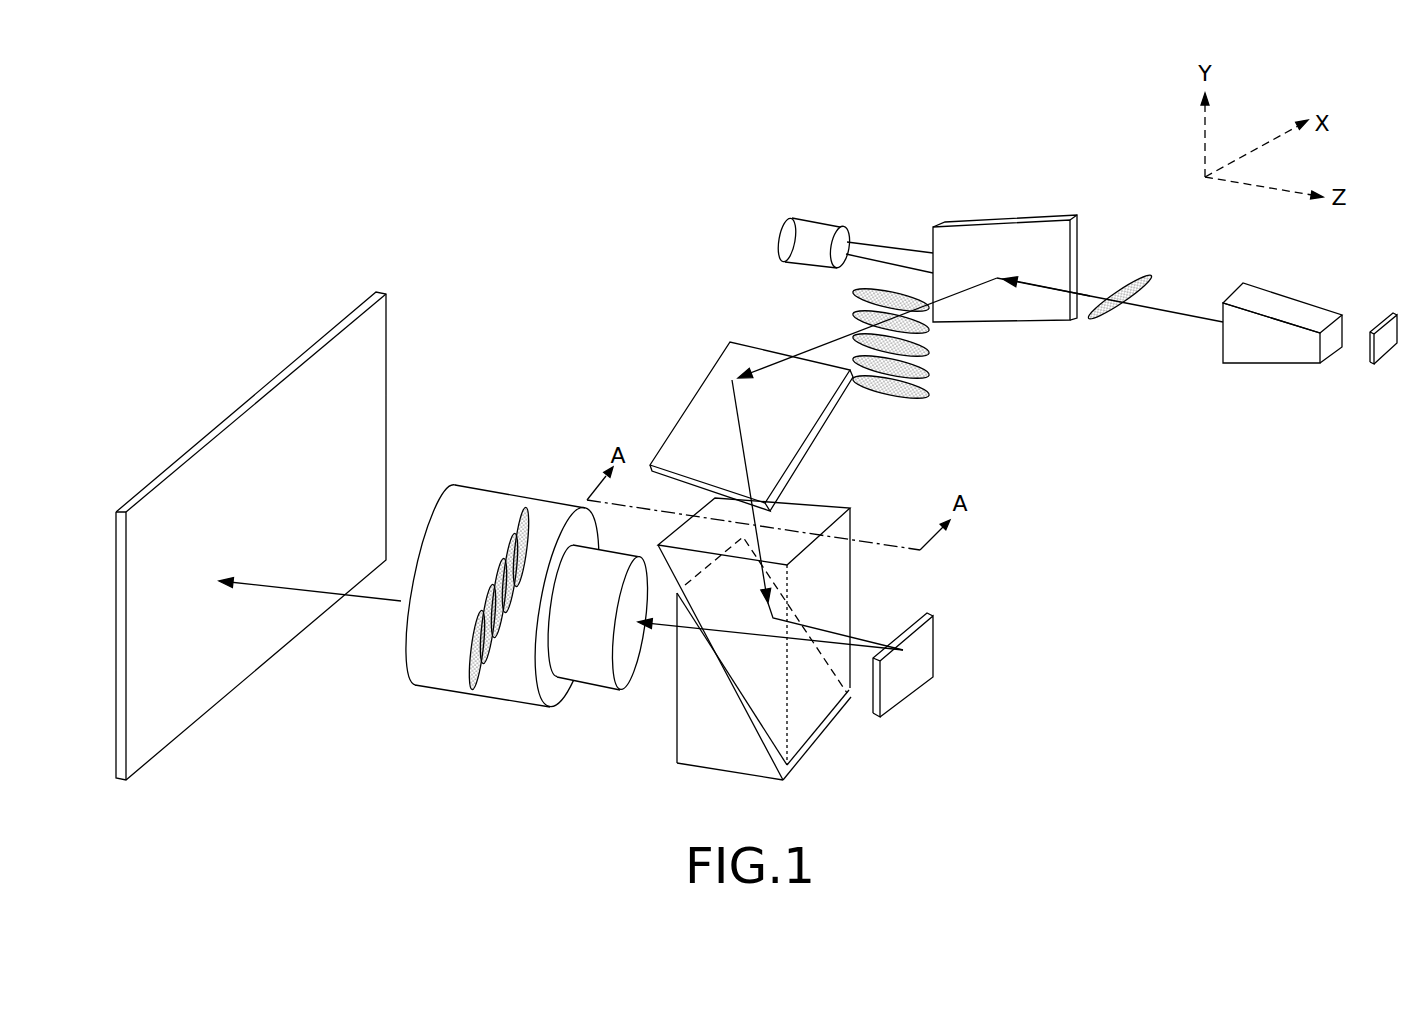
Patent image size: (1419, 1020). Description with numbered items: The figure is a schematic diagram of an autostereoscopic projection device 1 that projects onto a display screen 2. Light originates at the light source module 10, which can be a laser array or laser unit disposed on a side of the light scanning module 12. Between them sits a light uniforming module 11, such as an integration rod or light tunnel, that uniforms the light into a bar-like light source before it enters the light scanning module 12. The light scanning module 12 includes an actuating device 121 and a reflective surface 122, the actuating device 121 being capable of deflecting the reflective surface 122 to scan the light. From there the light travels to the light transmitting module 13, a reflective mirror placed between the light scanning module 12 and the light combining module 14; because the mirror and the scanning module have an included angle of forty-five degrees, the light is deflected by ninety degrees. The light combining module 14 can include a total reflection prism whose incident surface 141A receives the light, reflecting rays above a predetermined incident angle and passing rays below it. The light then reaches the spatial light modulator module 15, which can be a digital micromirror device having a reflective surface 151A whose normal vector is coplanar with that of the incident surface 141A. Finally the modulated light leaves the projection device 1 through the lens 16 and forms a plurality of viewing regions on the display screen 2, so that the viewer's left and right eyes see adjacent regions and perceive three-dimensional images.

The projection device 1 is at (325, 165).
The display screen 2 is at (277, 378).
The light source module 10 is at (1390, 343).
The light uniforming module 11 is at (1272, 357).
The light scanning module 12 is at (930, 150).
The actuating device 121 is at (826, 233).
The reflective surface 122 is at (945, 225).
The light transmitting module 13 is at (748, 352).
The light combining module 14 is at (786, 611).
The incident surface 141A is at (812, 505).
The spatial light modulator module 15 is at (941, 636).
The reflective surface 151A is at (907, 620).
The lens 16 is at (508, 502).